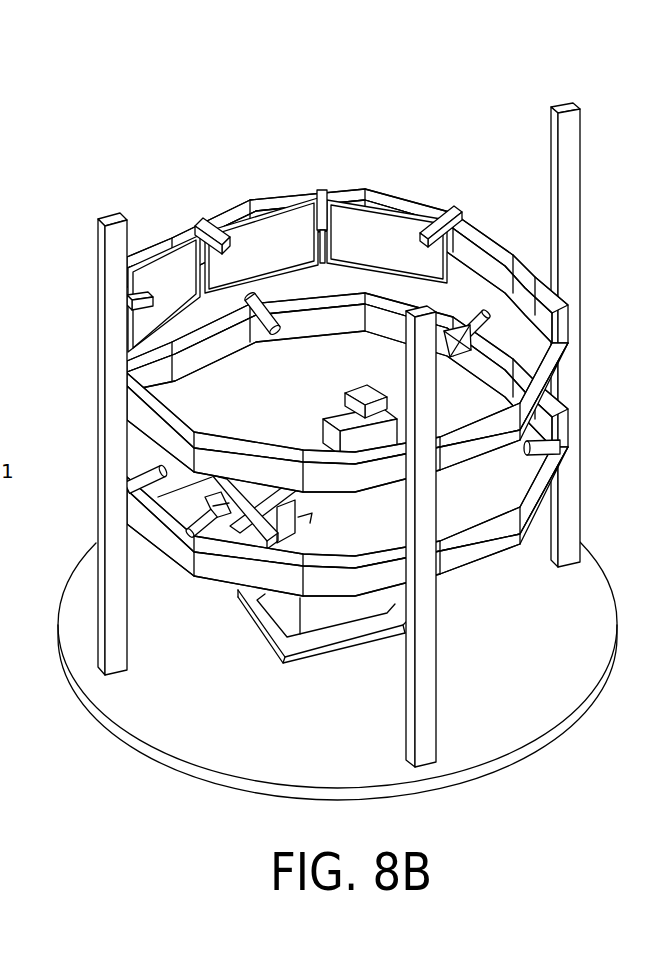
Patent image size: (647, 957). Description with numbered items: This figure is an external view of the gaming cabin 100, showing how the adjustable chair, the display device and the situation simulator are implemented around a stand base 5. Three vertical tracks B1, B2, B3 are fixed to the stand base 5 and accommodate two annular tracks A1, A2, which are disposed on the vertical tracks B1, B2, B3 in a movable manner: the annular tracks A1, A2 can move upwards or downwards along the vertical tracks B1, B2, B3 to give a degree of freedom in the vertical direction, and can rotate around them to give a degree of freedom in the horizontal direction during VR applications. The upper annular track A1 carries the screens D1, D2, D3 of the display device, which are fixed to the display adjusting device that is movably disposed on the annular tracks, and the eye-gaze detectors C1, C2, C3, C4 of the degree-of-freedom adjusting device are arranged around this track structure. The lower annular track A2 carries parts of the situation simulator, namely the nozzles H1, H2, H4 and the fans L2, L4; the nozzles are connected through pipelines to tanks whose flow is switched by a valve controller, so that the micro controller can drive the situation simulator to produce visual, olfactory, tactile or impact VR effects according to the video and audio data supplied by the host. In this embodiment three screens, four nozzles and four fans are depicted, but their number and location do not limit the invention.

The gaming cabin 100 is at (346, 421).
The stand base 5 is at (540, 708).
The annular track A1 is at (555, 383).
The annular track A2 is at (553, 493).
The vertical track B1 is at (111, 215).
The vertical track B2 is at (425, 686).
The vertical track B3 is at (565, 106).
The eye-gaze detector C1 is at (128, 302).
The eye-gaze detector C2 is at (205, 222).
The eye-gaze detector C3 is at (322, 190).
The eye-gaze detector C4 is at (440, 214).
The screen D1 is at (190, 307).
The screen D2 is at (275, 266).
The screen D3 is at (398, 260).
The nozzle H1 is at (272, 327).
The nozzle H2 is at (150, 478).
The nozzle H4 is at (538, 456).
The fan L2 is at (210, 523).
The fan L4 is at (460, 348).